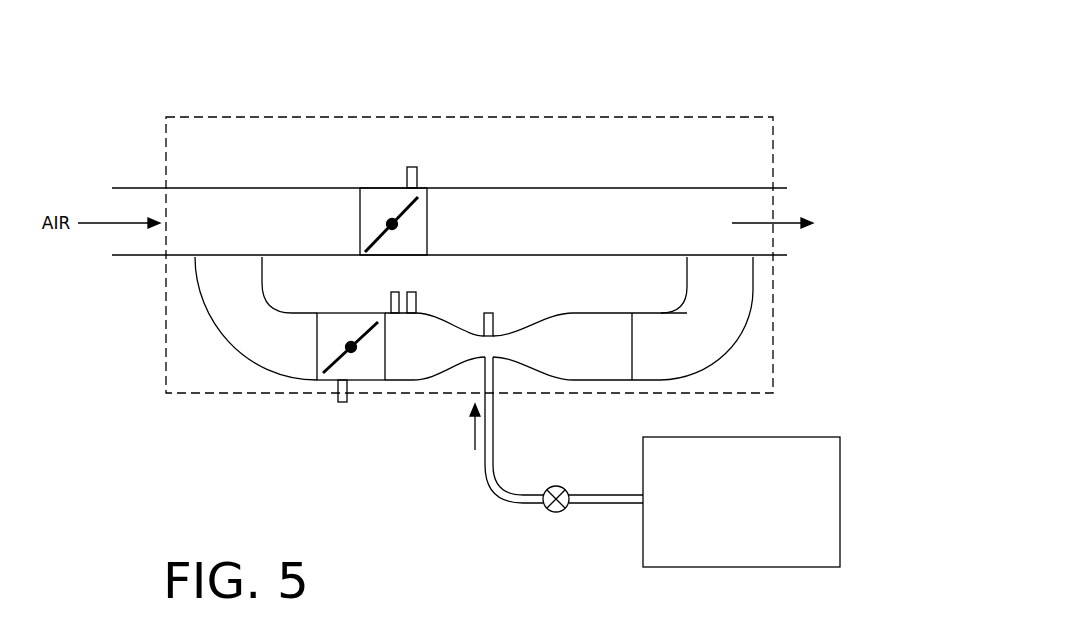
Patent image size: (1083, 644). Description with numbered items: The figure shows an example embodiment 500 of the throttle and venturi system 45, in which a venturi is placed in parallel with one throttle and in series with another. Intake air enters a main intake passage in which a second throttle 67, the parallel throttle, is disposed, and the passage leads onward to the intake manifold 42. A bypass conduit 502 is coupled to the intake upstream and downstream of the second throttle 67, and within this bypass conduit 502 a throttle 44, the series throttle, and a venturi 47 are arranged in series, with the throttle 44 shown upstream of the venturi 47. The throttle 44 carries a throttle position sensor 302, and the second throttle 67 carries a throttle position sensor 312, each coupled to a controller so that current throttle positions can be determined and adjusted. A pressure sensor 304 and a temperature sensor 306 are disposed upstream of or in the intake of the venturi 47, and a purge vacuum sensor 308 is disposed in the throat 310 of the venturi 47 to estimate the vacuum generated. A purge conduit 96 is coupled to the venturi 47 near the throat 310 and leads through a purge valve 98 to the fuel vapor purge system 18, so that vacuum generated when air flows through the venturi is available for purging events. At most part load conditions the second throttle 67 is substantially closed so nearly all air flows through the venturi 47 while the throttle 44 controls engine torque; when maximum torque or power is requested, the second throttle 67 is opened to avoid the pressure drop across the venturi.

The example embodiment of throttle and venturi system 500 is at (783, 73).
The throttle and venturi system 45 is at (630, 117).
The second throttle 67 is at (392, 188).
The throttle position sensor 312 is at (410, 166).
The bypass conduit 502 is at (232, 358).
The throttle 44 is at (355, 313).
The throttle position sensor 302 is at (342, 403).
The pressure sensor 304 is at (395, 292).
The temperature sensor 306 is at (411, 292).
The throat 310 is at (489, 347).
The purge vacuum sensor 308 is at (489, 313).
The venturi 47 is at (608, 313).
The intake manifold 42 is at (815, 226).
The purge conduit 96 is at (490, 483).
The purge valve 98 is at (555, 512).
The fuel vapor purge system 18 is at (741, 502).